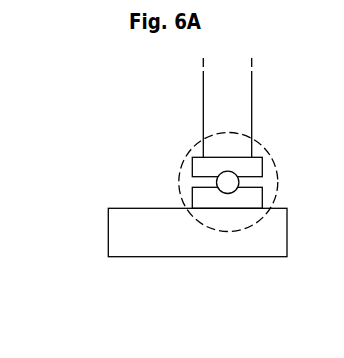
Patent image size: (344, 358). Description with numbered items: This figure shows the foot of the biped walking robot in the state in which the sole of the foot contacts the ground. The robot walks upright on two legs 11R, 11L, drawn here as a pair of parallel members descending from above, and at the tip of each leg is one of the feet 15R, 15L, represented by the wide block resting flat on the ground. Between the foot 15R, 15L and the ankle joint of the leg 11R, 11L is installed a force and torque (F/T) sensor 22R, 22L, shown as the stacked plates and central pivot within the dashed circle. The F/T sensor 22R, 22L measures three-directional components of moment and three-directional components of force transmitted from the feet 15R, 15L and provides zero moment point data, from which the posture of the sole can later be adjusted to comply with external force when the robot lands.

The leg 11R is at (167, 106).
The leg 11L is at (203, 93).
The force and torque (F/T) sensor 22R is at (159, 181).
The force and torque (F/T) sensor 22L is at (178, 183).
The foot 15R is at (197, 271).
The foot 15L is at (254, 245).